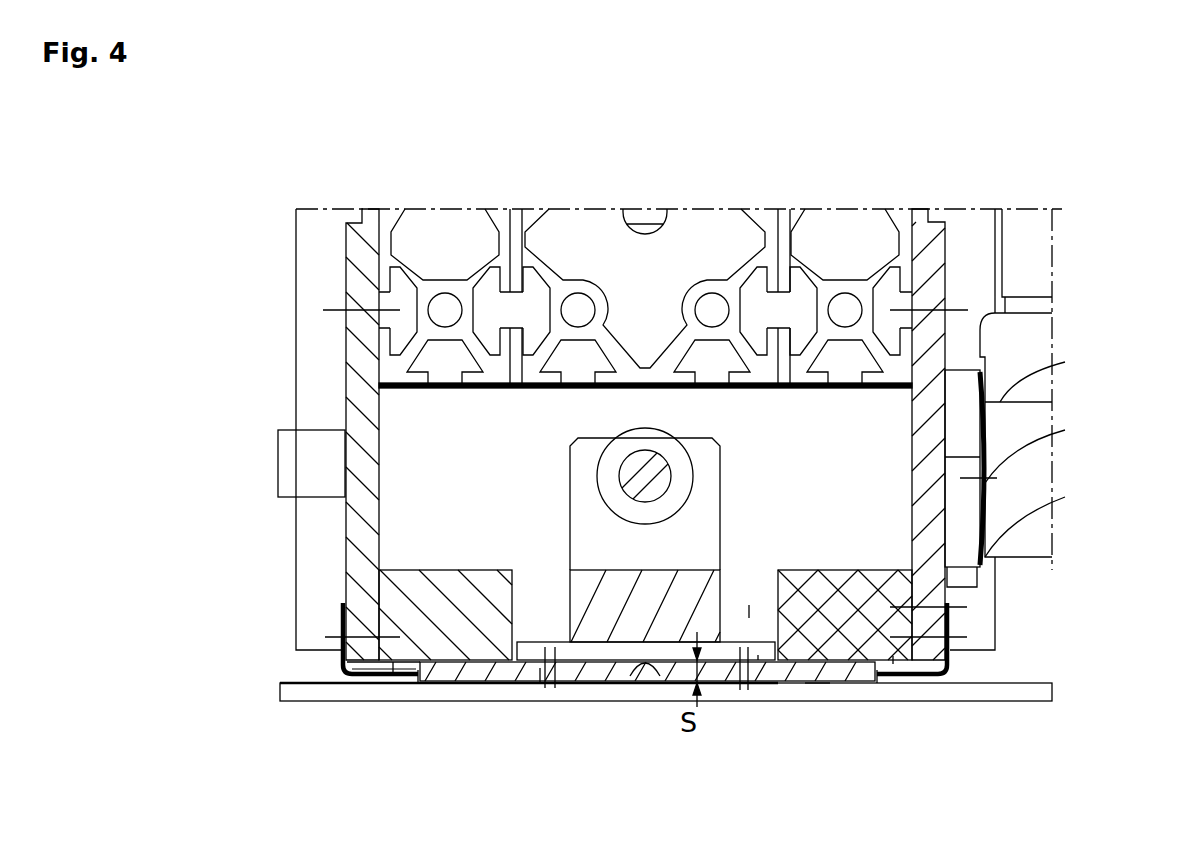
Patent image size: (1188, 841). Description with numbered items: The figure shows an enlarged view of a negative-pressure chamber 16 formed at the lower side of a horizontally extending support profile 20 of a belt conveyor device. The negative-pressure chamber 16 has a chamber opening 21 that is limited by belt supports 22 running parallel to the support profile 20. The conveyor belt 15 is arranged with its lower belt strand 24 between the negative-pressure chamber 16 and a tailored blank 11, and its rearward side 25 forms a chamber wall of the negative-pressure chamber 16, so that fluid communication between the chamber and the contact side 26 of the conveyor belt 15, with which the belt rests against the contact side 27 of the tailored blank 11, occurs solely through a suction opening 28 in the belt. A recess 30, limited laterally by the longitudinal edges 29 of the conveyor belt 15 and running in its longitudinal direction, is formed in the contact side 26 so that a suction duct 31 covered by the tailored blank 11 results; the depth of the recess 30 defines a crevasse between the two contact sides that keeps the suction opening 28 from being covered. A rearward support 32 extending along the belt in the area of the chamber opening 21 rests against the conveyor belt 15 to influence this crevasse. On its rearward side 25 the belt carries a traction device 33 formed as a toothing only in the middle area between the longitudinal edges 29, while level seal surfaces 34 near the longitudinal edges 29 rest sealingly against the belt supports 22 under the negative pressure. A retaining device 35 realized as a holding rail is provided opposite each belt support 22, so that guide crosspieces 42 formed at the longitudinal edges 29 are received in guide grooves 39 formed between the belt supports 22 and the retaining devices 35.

The tailored blank 11 is at (980, 692).
The conveyor belt 15 is at (815, 684).
The negative-pressure chamber 16 is at (838, 489).
The support profile 20 is at (790, 216).
The chamber opening 21 is at (749, 618).
The belt supports 22 is at (397, 605).
The lower belt strand 24 is at (462, 674).
The rearward side 25 is at (543, 640).
The contact side 26 is at (715, 674).
The contact side 27 is at (636, 672).
The suction opening 28 is at (540, 668).
The longitudinal edges 29 is at (425, 582).
The recess 30 is at (556, 684).
The suction duct 31 is at (600, 684).
The rearward support 32 is at (588, 583).
The traction device 33 is at (758, 655).
The seal surfaces 34 is at (343, 603).
The retaining device 35 is at (952, 669).
The guide grooves 39 is at (368, 666).
The guide crosspieces 42 is at (893, 656).